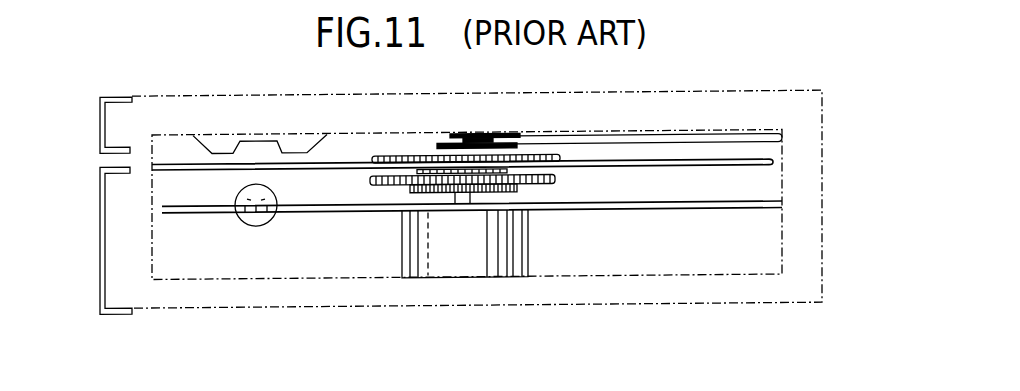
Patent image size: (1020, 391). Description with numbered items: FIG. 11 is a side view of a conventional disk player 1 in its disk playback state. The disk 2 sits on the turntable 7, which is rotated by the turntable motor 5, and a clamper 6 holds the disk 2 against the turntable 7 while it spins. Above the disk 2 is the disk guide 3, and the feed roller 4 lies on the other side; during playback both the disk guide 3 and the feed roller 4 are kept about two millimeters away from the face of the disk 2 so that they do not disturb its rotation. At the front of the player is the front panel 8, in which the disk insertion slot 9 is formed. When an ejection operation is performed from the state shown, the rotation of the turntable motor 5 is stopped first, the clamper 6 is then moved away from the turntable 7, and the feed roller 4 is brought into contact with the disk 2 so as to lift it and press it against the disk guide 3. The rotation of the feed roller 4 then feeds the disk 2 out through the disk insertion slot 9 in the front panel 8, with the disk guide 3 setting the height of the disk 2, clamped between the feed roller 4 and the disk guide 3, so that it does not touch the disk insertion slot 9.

The housing 1 is at (824, 157).
The disk 2 is at (683, 175).
The disk guide 3 is at (290, 134).
The feed roller 4 is at (253, 223).
The turntable motor 5 is at (402, 249).
The clamper 6 is at (394, 159).
The turntable 7 is at (363, 185).
The front panel 8 is at (102, 275).
The disk insertion slot 9 is at (100, 157).